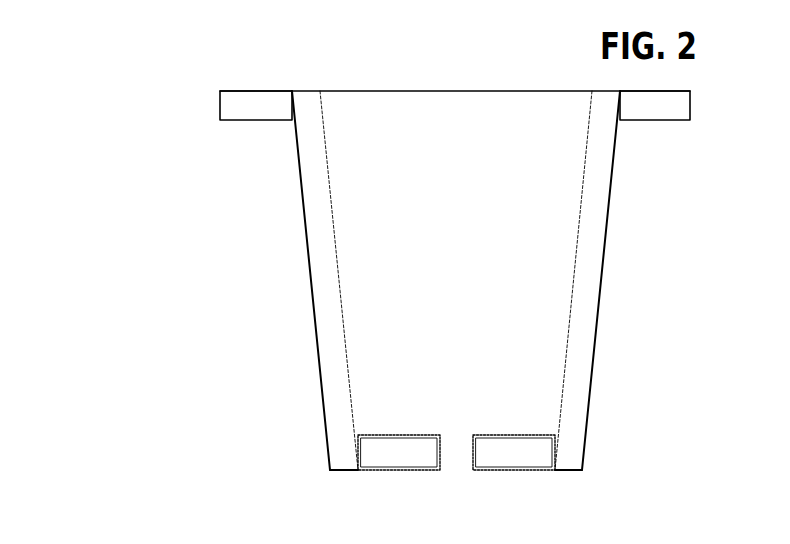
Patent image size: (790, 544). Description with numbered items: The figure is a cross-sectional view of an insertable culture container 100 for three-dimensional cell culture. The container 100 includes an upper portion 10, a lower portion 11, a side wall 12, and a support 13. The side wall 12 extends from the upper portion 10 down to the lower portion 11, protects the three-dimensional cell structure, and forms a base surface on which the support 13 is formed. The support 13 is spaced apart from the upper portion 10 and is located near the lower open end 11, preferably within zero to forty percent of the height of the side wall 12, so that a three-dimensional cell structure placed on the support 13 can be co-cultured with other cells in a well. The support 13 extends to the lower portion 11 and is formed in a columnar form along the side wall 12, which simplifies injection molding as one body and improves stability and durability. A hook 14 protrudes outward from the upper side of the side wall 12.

The insertable culture container 100 is at (242, 492).
The upper portion 10 is at (308, 100).
The lower portion 11 is at (452, 470).
The side wall 12 is at (312, 207).
The support 13 is at (403, 441).
The hook 14 is at (229, 104).